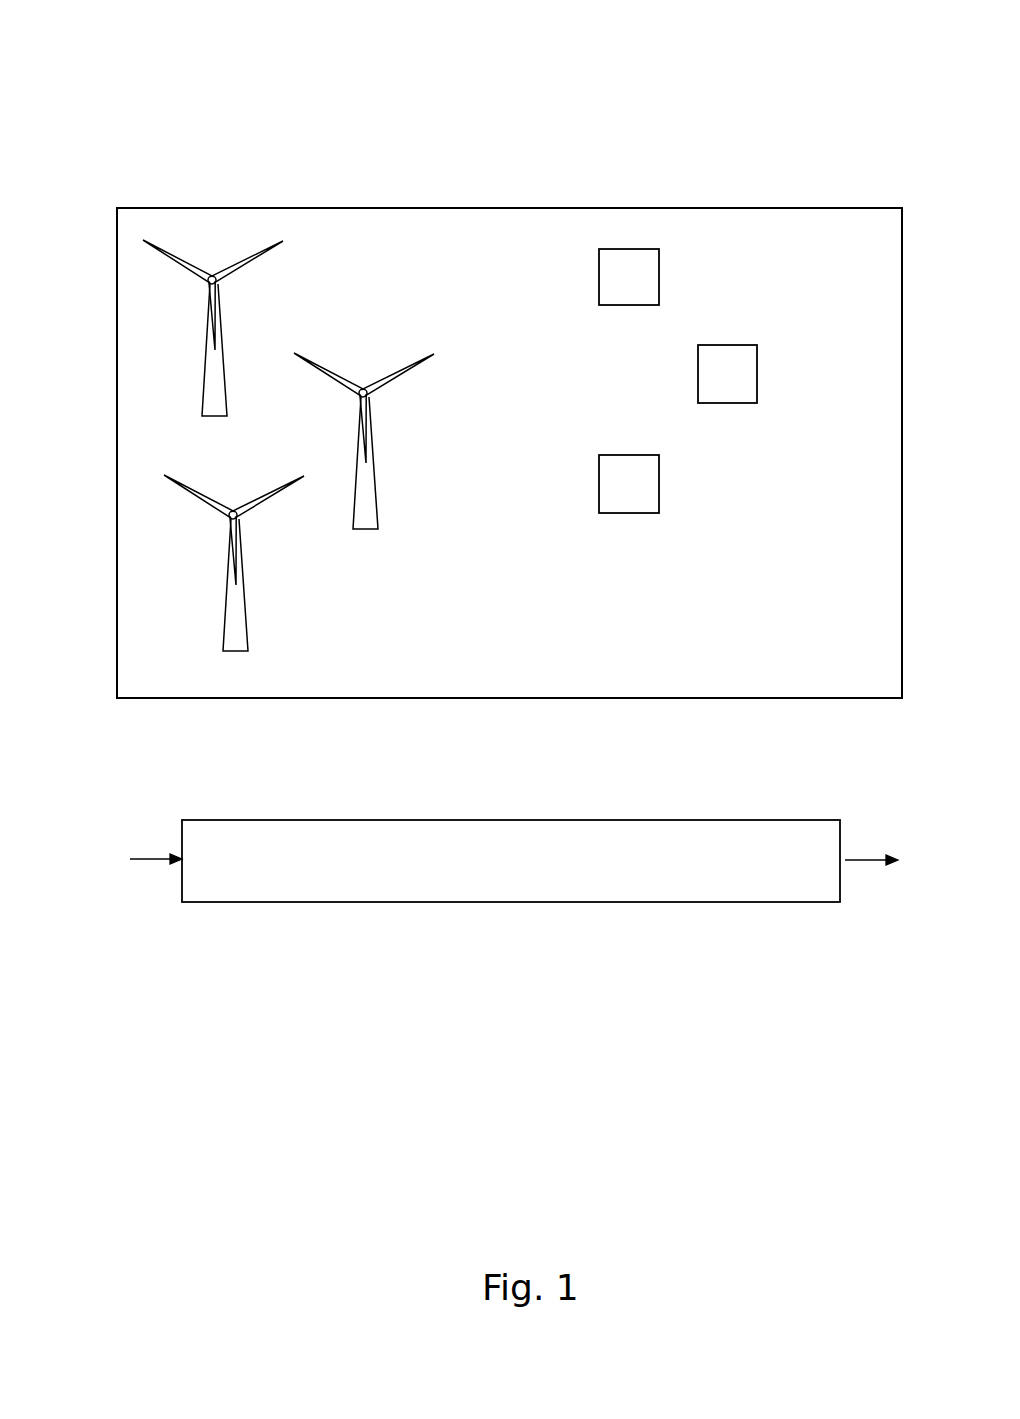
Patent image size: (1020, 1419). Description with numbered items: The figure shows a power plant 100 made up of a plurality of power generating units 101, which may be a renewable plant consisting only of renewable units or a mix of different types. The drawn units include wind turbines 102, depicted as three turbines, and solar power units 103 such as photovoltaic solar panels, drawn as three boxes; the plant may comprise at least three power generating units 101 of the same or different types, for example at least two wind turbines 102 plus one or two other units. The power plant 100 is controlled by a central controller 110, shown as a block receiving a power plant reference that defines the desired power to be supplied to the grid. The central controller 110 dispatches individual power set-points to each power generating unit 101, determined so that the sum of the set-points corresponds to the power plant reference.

The power plant 100 is at (190, 68).
The power generating units 101 is at (237, 309).
The wind turbines 102 is at (375, 458).
The solar power units 103 is at (662, 275).
The central controller 110 is at (302, 917).